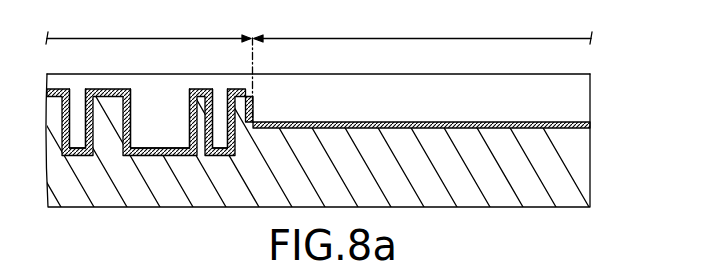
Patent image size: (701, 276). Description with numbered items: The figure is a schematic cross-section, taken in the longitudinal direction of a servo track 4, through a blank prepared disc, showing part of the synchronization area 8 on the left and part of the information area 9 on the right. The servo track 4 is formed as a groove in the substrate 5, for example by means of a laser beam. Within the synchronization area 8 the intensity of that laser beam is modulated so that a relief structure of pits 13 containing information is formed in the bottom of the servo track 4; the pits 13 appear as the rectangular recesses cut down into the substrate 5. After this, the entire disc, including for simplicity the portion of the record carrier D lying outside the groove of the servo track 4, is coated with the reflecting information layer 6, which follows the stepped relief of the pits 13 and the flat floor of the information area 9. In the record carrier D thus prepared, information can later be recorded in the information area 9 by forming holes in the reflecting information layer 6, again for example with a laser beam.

The servo track 4 is at (608, 102).
The substrate 5 is at (570, 172).
The reflecting information layer 6 is at (570, 124).
The synchronization area 8 is at (186, 34).
The information area 9 is at (405, 38).
The pits 13 is at (217, 89).
The record carrier D is at (531, 69).